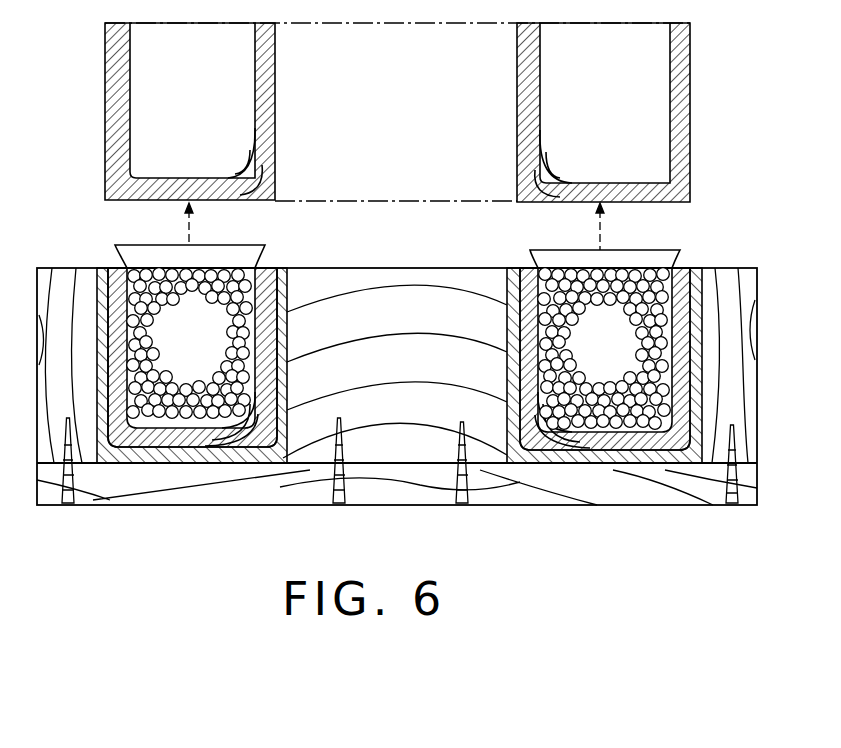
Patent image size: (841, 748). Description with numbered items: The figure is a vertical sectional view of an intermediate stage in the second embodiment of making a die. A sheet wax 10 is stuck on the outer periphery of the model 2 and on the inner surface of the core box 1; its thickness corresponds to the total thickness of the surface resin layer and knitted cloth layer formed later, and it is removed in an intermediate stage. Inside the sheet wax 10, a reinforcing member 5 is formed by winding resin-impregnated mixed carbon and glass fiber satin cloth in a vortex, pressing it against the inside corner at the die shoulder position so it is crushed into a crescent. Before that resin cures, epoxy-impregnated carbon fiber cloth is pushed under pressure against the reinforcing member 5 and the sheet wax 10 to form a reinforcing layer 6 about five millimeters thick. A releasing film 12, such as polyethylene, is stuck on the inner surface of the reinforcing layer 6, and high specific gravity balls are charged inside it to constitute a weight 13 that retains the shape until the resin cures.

The core box 1 is at (736, 276).
The model 2 is at (382, 282).
The reinforcing member 5 is at (262, 166).
The reinforcing layer 6 is at (270, 96).
The sheet wax 10 is at (666, 458).
The releasing film 12 is at (536, 266).
The weight 13 is at (653, 268).